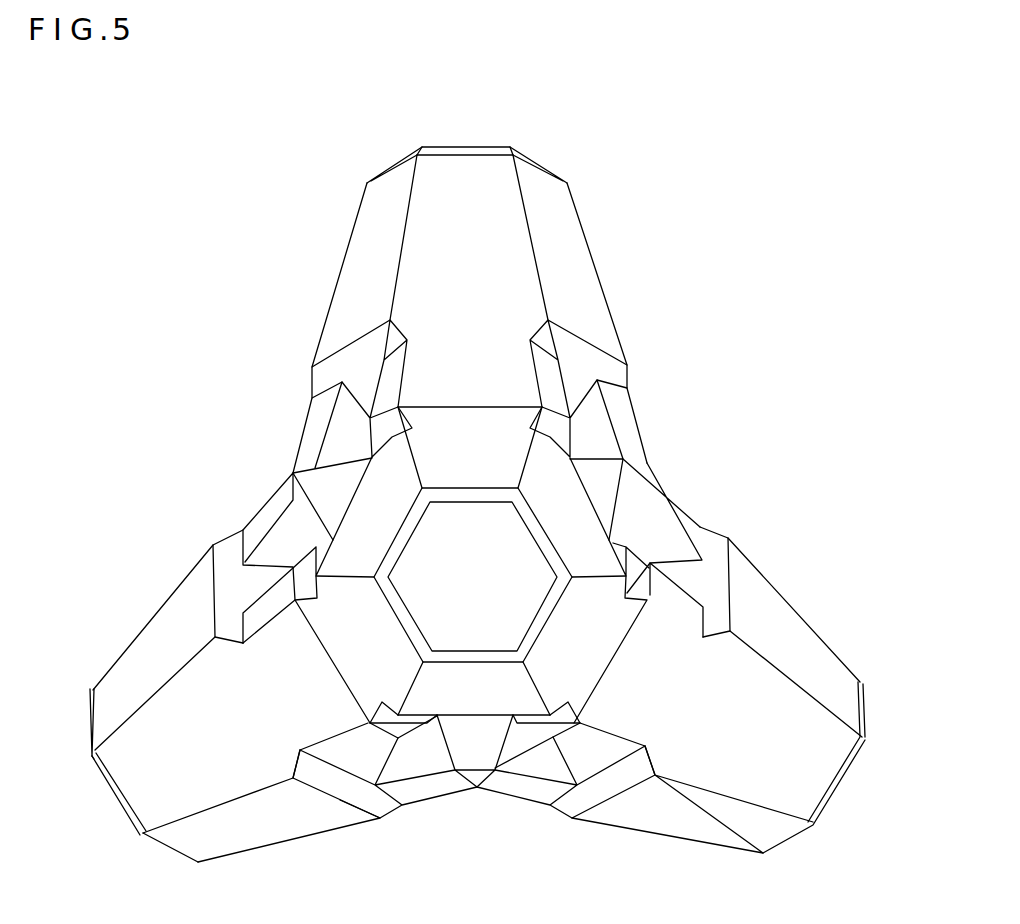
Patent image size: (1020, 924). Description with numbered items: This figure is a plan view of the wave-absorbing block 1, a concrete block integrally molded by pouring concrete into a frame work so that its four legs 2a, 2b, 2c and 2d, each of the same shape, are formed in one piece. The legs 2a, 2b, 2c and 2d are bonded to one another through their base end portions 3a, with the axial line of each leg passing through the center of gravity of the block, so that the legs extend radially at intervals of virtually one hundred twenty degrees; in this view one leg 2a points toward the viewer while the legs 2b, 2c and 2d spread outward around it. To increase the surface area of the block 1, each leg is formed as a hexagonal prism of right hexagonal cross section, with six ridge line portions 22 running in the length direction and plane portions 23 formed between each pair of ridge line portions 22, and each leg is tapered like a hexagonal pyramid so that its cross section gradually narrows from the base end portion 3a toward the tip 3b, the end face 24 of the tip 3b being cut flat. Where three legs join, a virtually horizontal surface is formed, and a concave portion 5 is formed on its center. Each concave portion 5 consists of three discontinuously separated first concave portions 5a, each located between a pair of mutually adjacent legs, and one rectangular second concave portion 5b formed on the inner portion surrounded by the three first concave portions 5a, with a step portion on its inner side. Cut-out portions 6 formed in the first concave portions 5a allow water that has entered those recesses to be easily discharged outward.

The wave-absorbing block 1 is at (458, 128).
The leg 2a is at (340, 673).
The leg 2b is at (168, 598).
The leg 2c is at (787, 598).
The leg 2d is at (590, 242).
The base end portion 3a is at (480, 360).
The tip 3b is at (565, 200).
The concave portion 5 is at (474, 634).
The first concave portion 5a is at (625, 425).
The second concave portion 5b is at (468, 619).
The cut-out portion 6 is at (252, 505).
The ridge line portion 22 is at (137, 628).
The plane portion 23 is at (125, 680).
The end face 24 is at (103, 781).